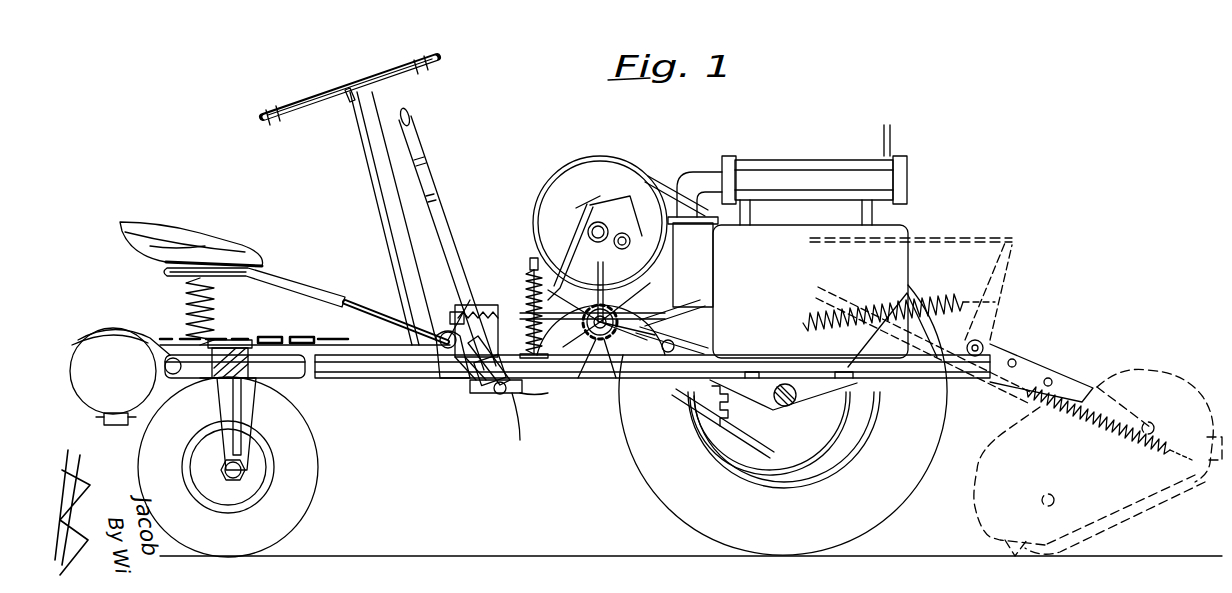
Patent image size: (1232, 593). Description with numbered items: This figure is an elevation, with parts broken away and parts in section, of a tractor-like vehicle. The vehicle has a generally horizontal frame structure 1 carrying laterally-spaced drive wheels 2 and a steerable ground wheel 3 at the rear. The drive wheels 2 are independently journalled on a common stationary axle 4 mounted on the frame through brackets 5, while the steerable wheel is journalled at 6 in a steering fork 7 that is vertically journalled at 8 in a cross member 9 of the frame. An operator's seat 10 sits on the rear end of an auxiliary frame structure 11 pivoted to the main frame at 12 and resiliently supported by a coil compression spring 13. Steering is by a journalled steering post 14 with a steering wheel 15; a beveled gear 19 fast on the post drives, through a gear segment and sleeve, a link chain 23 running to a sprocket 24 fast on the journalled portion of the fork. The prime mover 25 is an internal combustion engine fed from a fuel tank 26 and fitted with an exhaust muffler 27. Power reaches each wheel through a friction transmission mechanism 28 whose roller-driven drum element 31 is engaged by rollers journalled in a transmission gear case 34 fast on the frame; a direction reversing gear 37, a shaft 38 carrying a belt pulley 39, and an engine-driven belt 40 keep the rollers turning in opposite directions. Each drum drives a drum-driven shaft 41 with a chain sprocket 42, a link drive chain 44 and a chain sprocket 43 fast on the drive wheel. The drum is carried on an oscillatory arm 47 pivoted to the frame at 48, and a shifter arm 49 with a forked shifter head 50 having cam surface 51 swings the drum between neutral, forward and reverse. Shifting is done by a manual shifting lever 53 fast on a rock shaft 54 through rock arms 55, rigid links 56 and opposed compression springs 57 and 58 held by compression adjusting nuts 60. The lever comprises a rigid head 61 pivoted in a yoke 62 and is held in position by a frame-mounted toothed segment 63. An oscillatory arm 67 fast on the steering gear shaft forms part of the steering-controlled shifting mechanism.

The frame structure 1 is at (416, 383).
The drive wheels 2 is at (672, 510).
The steerable ground wheel 3 is at (292, 497).
The stationary axle 4 is at (782, 406).
The brackets 5 is at (812, 394).
The wheel journal 6 is at (224, 470).
The steering fork 7 is at (240, 408).
The journalled portion of fork 8 is at (215, 372).
The cross member 9 is at (290, 380).
The operator's seat 10 is at (208, 240).
The auxiliary frame structure 11 is at (362, 284).
The pivot of auxiliary frame 12 is at (447, 350).
The coil compression spring 13 is at (200, 320).
The steering post 14 is at (358, 134).
The steering wheel 15 is at (438, 58).
The beveled gear 19 is at (435, 348).
The link chain 23 is at (365, 342).
The sprocket 24 is at (210, 348).
The prime mover 25 is at (916, 228).
The fuel tank 26 is at (122, 382).
The exhaust muffler 27 is at (886, 178).
The transmission mechanism 28 is at (560, 260).
The drum element 31 is at (662, 296).
The transmission gear case 34 is at (600, 222).
The direction reversing gear 37 is at (623, 233).
The shaft 38 is at (583, 262).
The belt pulley 39 is at (578, 165).
The engine-driven belt 40 is at (653, 178).
The drum-driven shaft 41 is at (586, 360).
The chain sprocket 42 is at (606, 362).
The chain sprocket 43 is at (705, 425).
The link drive chain 44 is at (682, 398).
The oscillatory arm 47 is at (655, 330).
The pivot of oscillatory arm 48 is at (674, 344).
The shifter arm 49 is at (595, 308).
The shifter head 50 is at (498, 302).
The cam surface 51 is at (450, 312).
The shifting lever 53 is at (425, 178).
The rock shaft 54 is at (500, 394).
The rock arm 55 is at (526, 398).
The rigid link 56 is at (538, 258).
The compression spring 57 is at (545, 297).
The compression spring 58 is at (544, 334).
The compression adjusting nut 60 is at (528, 266).
The rigid head 61 is at (508, 368).
The yoke 62 is at (522, 396).
The toothed segment 63 is at (462, 352).
The oscillatory arm 67 is at (380, 348).